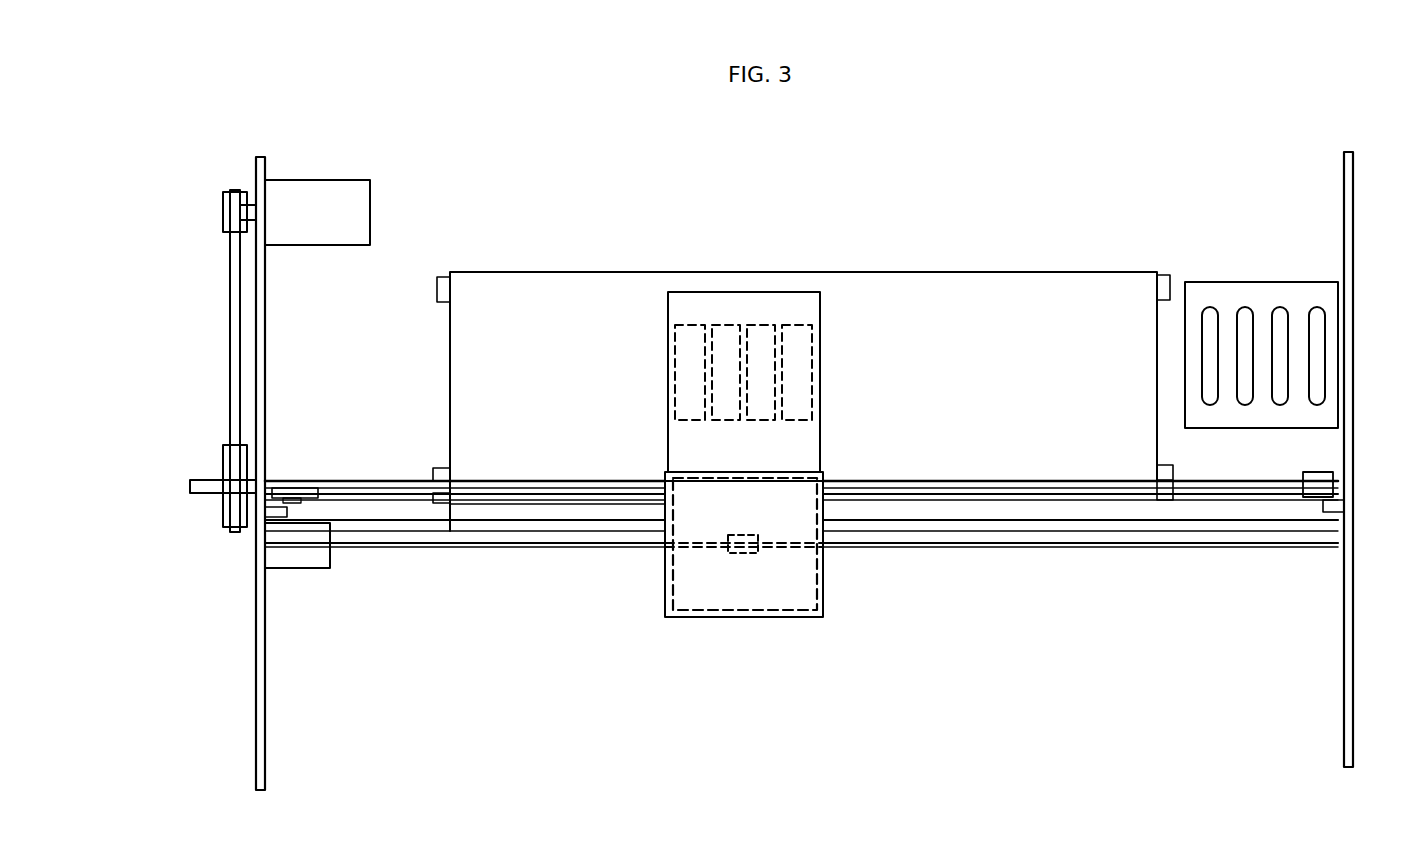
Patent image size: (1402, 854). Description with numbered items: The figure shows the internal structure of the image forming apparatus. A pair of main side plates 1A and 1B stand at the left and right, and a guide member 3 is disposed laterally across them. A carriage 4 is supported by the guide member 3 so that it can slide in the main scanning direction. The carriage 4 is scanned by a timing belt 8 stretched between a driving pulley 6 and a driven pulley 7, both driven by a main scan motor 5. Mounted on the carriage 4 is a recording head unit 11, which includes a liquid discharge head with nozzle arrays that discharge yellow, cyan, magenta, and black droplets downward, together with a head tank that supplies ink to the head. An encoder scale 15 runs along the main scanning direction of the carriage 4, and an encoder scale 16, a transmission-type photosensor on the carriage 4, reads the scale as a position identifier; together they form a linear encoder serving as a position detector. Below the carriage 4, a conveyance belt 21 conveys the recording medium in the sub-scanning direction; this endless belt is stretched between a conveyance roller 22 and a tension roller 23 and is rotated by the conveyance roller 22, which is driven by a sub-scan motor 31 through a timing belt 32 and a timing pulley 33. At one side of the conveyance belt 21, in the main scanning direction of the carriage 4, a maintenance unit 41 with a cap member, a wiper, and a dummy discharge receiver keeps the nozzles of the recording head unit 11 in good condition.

The main side plate 1A is at (256, 752).
The main side plate 1B is at (1344, 742).
The guide member 3 is at (925, 512).
The carriage 4 is at (803, 300).
The main scan motor 5 is at (296, 555).
The driving pulley 6 is at (298, 488).
The driven pulley 7 is at (1313, 472).
The timing belt 8 is at (490, 495).
The recording head unit 11 is at (795, 325).
The encoder scale 15 is at (590, 550).
The encoder scale 16 is at (747, 553).
The conveyance belt 21 is at (950, 280).
The conveyance roller 22 is at (1175, 470).
The tension roller 23 is at (1160, 275).
The sub-scan motor 31 is at (318, 194).
The timing belt 32 is at (230, 402).
The timing pulley 33 is at (223, 515).
The maintenance unit 41 is at (1255, 290).